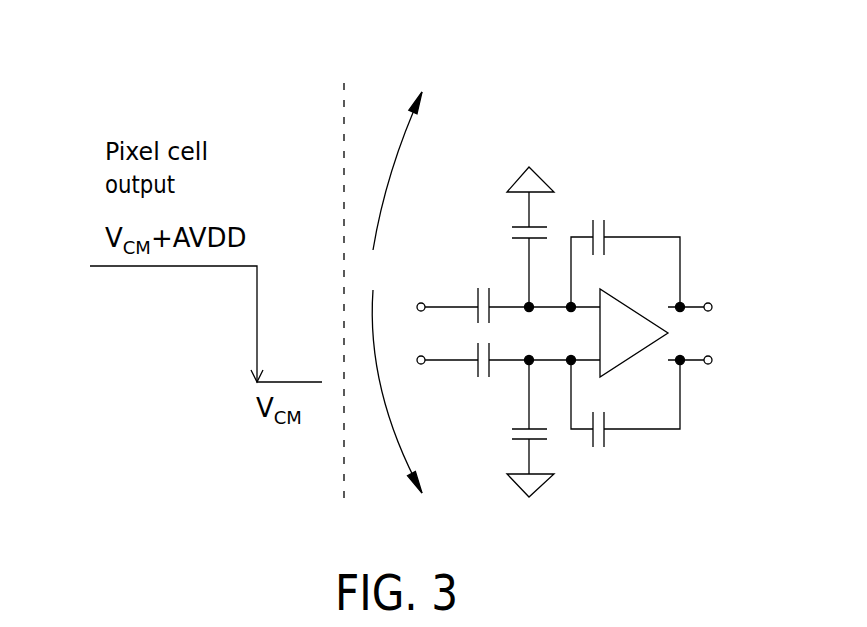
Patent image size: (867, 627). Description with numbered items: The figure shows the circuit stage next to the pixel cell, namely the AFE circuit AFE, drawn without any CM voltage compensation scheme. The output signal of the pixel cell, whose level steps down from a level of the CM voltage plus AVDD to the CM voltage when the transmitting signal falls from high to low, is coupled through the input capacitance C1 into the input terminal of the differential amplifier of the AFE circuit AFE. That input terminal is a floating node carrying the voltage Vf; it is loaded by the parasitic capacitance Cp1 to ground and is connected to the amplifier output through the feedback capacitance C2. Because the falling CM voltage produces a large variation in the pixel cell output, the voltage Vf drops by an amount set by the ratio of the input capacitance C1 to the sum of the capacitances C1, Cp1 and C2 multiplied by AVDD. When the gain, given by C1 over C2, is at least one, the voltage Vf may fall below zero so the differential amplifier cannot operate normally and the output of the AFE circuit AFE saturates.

The AFE circuit AFE is at (383, 290).
The input capacitance C1 is at (469, 335).
The parasitic capacitance Cp1 is at (508, 332).
The feedback capacitance C2 is at (625, 339).
The voltage on the floating node Vf is at (619, 333).